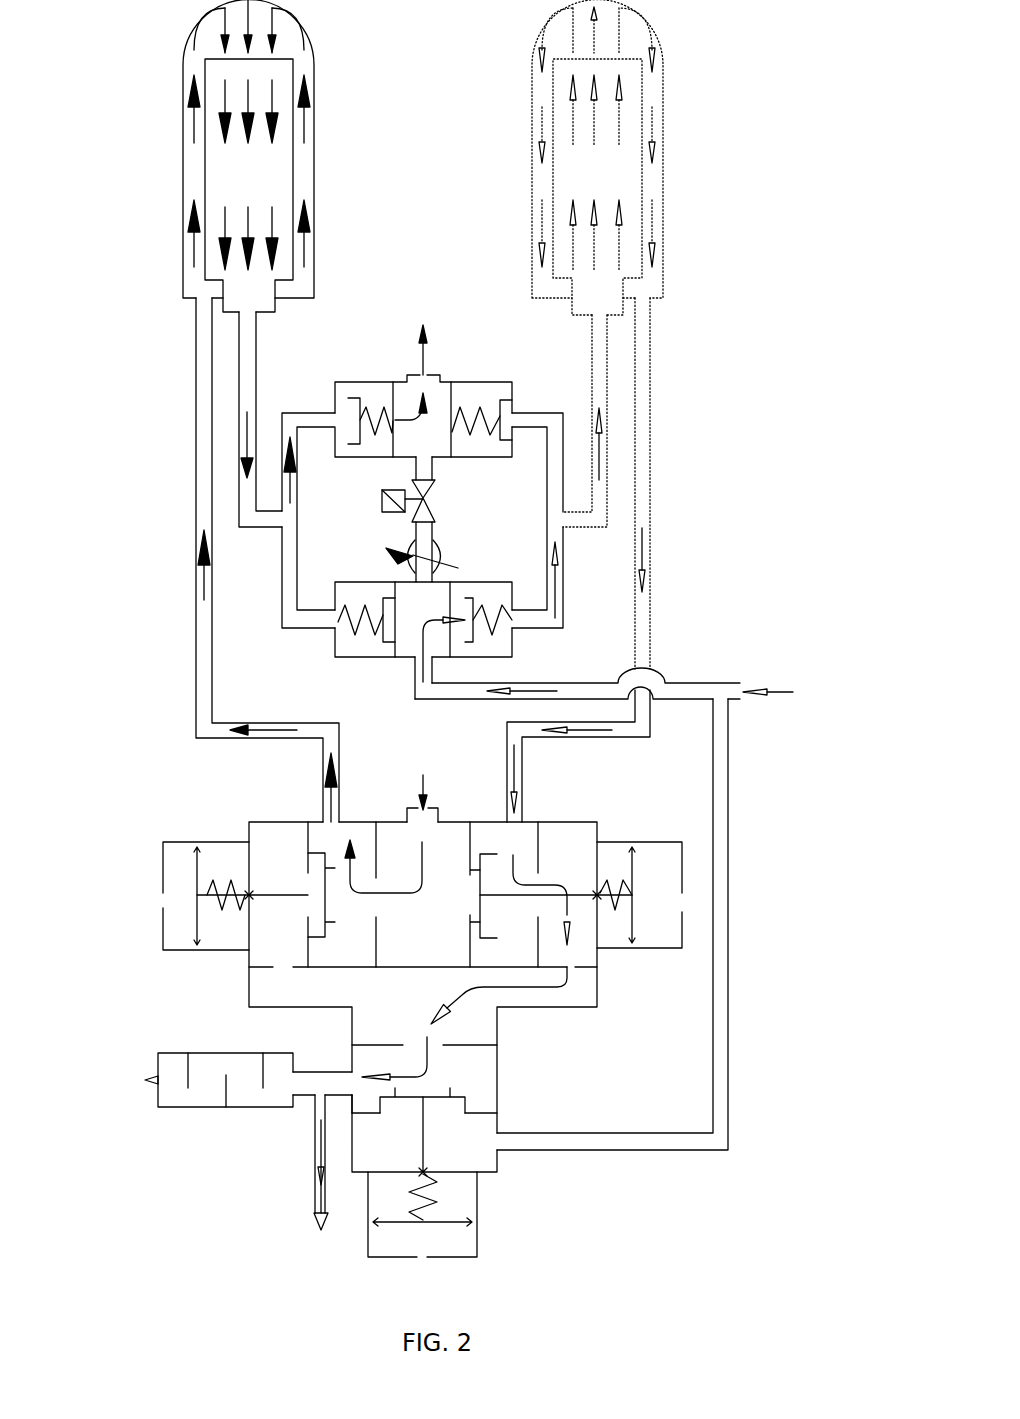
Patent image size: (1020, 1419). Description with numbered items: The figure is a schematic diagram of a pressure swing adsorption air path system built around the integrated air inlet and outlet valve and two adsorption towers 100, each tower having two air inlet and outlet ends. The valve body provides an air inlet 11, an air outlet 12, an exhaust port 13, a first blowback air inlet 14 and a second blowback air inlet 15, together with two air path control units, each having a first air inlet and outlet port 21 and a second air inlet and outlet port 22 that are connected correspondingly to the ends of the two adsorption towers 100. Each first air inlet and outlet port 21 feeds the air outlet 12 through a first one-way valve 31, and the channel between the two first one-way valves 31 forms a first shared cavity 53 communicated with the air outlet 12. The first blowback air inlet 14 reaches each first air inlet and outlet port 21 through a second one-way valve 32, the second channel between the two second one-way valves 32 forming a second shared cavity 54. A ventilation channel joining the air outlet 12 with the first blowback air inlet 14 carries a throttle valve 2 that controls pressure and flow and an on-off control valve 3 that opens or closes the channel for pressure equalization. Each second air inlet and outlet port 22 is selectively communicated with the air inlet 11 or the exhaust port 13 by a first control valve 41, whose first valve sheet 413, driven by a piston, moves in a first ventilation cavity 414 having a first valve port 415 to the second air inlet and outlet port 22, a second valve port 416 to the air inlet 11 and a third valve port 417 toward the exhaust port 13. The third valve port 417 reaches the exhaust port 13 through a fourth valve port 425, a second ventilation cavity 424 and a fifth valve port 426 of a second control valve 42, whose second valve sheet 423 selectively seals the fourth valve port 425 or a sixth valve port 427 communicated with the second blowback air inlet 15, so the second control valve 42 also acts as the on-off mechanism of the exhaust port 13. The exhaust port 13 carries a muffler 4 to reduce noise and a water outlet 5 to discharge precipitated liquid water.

The adsorption tower 100 is at (227, 162).
The throttle valve 2 is at (433, 553).
The on-off control valve 3 is at (430, 488).
The muffler 4 is at (210, 1090).
The water outlet 5 is at (352, 1085).
The air inlet 11 is at (420, 806).
The air outlet 12 is at (427, 375).
The exhaust port 13 is at (315, 1078).
The first blowback air inlet 14 is at (433, 667).
The second blowback air inlet 15 is at (507, 1147).
The first air inlet and outlet port 21 is at (273, 520).
The second air inlet and outlet port 22 is at (327, 807).
The first one-way valve 31 is at (353, 400).
The second one-way valve 32 is at (383, 635).
The first control valve 41 is at (195, 878).
The second control valve 42 is at (455, 1222).
The first shared cavity 53 is at (408, 400).
The second shared cavity 54 is at (413, 633).
The first valve sheet 413 is at (325, 883).
The first ventilation cavity 414 is at (360, 948).
The first valve port 415 is at (325, 822).
The second valve port 416 is at (373, 900).
The third valve port 417 is at (305, 905).
The second valve sheet 423 is at (421, 1097).
The second ventilation cavity 424 is at (477, 1067).
The fourth valve port 425 is at (425, 1033).
The fifth valve port 426 is at (348, 1083).
The sixth valve port 427 is at (435, 1115).